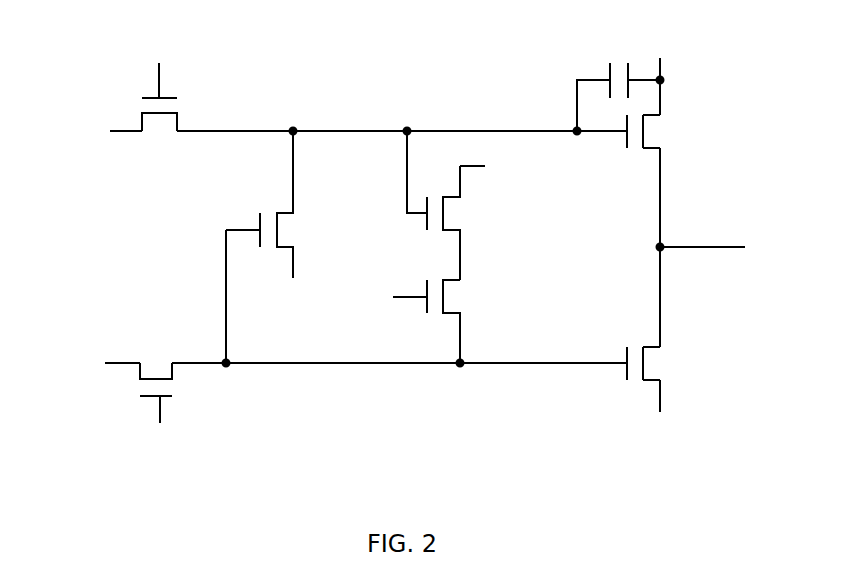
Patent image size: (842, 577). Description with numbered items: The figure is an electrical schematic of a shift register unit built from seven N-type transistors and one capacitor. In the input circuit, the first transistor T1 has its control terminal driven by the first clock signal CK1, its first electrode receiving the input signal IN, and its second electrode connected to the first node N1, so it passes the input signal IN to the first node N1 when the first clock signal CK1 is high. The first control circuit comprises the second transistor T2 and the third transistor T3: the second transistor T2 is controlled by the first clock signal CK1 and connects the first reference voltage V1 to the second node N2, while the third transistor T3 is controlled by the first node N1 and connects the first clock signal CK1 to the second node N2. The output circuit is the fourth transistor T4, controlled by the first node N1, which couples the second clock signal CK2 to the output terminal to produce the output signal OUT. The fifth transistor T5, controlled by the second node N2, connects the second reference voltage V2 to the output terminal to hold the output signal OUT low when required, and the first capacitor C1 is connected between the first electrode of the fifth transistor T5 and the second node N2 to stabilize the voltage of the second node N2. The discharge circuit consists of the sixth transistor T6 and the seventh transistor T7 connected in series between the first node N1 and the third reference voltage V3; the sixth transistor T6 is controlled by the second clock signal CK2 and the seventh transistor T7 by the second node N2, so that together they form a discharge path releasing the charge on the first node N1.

The first transistor T1 is at (156, 381).
The second transistor T2 is at (159, 110).
The third transistor T3 is at (264, 247).
The fourth transistor T4 is at (652, 379).
The fifth transistor T5 is at (653, 202).
The sixth transistor T6 is at (435, 321).
The seventh transistor T7 is at (442, 205).
The first capacitor C1 is at (618, 92).
The first node N1 is at (399, 377).
The second node N2 is at (402, 119).
The first clock signal CK1 is at (226, 258).
The second clock signal CK2 is at (527, 355).
The first reference voltage V1 is at (114, 130).
The second reference voltage V2 is at (661, 59).
The third reference voltage V3 is at (485, 167).
The input signal IN is at (108, 364).
The output signal OUT is at (701, 236).